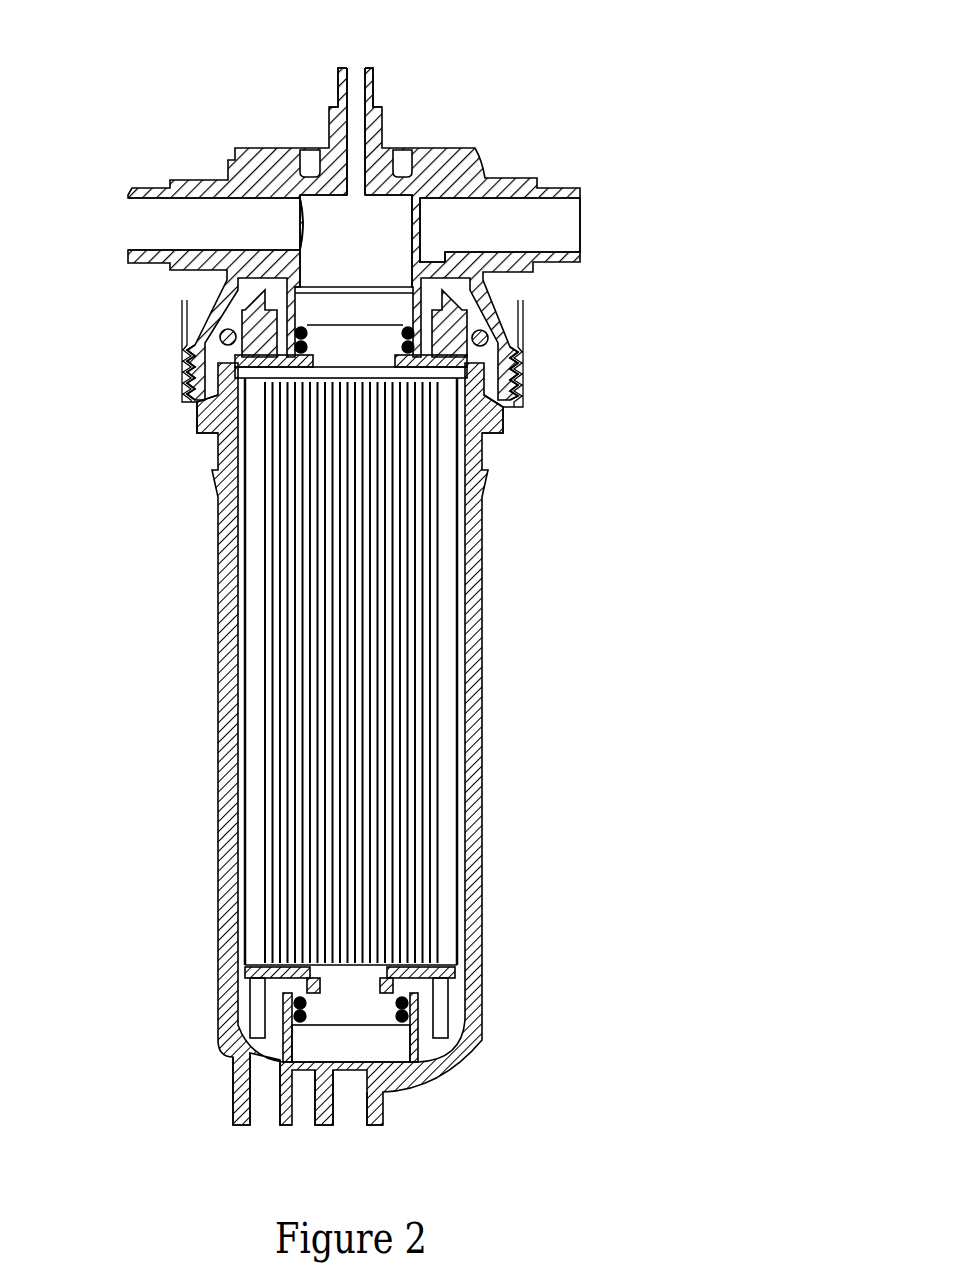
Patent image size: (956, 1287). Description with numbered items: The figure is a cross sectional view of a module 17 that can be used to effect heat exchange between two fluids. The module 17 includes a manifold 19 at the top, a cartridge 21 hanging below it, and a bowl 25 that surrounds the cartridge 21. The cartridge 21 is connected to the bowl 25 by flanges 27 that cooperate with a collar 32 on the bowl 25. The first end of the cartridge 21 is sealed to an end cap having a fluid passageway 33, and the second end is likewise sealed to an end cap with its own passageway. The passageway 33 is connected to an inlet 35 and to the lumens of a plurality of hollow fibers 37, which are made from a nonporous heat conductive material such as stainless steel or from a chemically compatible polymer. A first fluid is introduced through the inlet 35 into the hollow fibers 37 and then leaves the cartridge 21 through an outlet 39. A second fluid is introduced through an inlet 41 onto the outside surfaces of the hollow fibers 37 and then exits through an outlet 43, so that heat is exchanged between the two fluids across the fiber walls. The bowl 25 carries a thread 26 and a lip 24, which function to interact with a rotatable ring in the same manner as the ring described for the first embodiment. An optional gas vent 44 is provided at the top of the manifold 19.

The module 17 is at (413, 590).
The manifold 19 is at (366, 200).
The cartridge 21 is at (414, 674).
The lip 24 is at (503, 432).
The bowl 25 is at (397, 771).
The thread 26 is at (523, 373).
The flanges 27 is at (186, 351).
The collar 32 is at (482, 318).
The fluid passageway 33 is at (361, 347).
The inlet 35 is at (347, 1115).
The hollow fibers 37 is at (410, 687).
The outlet 39 is at (158, 227).
The inlet 41 is at (543, 223).
The outlet 43 is at (264, 1112).
The gas vent 44 is at (354, 87).